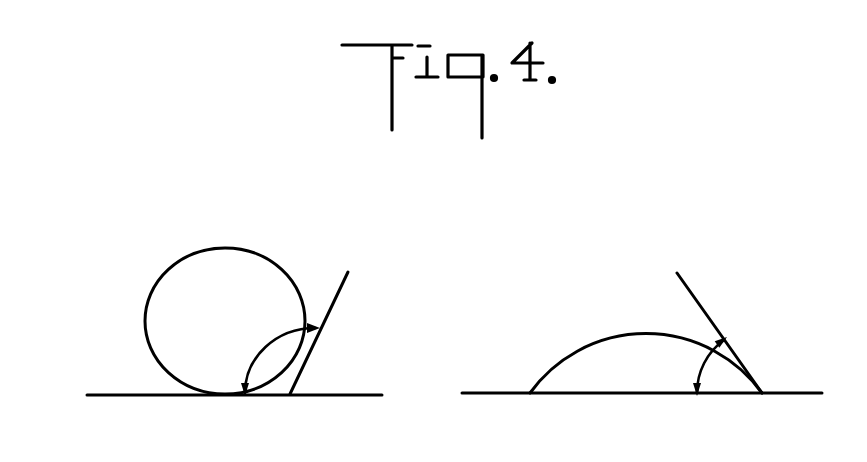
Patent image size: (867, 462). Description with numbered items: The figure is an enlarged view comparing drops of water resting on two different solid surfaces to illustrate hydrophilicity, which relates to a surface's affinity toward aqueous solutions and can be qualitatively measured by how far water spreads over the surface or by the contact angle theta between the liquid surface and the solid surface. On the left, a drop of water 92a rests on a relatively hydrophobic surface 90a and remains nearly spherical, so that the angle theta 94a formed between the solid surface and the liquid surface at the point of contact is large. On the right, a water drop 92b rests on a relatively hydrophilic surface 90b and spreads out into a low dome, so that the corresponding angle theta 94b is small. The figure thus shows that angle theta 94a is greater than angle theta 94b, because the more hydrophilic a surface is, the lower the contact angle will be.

The relatively hydrophobic surface 90a is at (115, 394).
The drop of water 92a is at (172, 272).
The angle theta 94a is at (283, 334).
The relatively hydrophilic surface 90b is at (502, 392).
The water drop 92b is at (597, 340).
The angle theta 94b is at (697, 372).